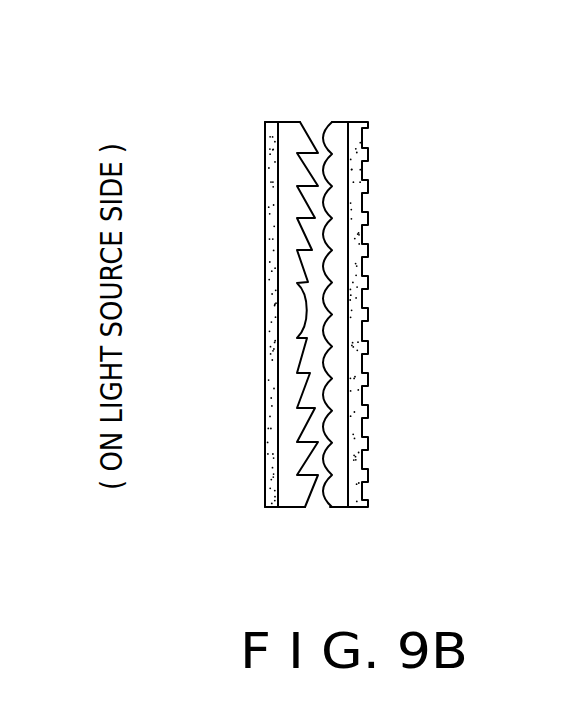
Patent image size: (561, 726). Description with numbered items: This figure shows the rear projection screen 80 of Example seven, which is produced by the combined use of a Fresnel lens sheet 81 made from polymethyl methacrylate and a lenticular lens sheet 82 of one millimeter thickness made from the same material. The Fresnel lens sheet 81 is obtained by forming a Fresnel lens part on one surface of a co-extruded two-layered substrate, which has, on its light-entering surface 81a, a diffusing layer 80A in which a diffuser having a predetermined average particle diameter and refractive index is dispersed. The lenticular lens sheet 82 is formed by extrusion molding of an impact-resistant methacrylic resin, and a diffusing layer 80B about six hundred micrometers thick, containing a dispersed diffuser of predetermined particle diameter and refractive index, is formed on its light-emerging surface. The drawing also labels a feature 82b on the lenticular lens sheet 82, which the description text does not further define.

The rear projection screen 80 is at (312, 347).
The diffusing layer 80A is at (265, 143).
The diffusing layer 80B is at (357, 123).
The Fresnel lens sheet 81 is at (239, 322).
The light-entering surface 81a is at (265, 317).
The lenticular lens sheet 82 is at (393, 321).
The diffusion layer 82b is at (367, 268).